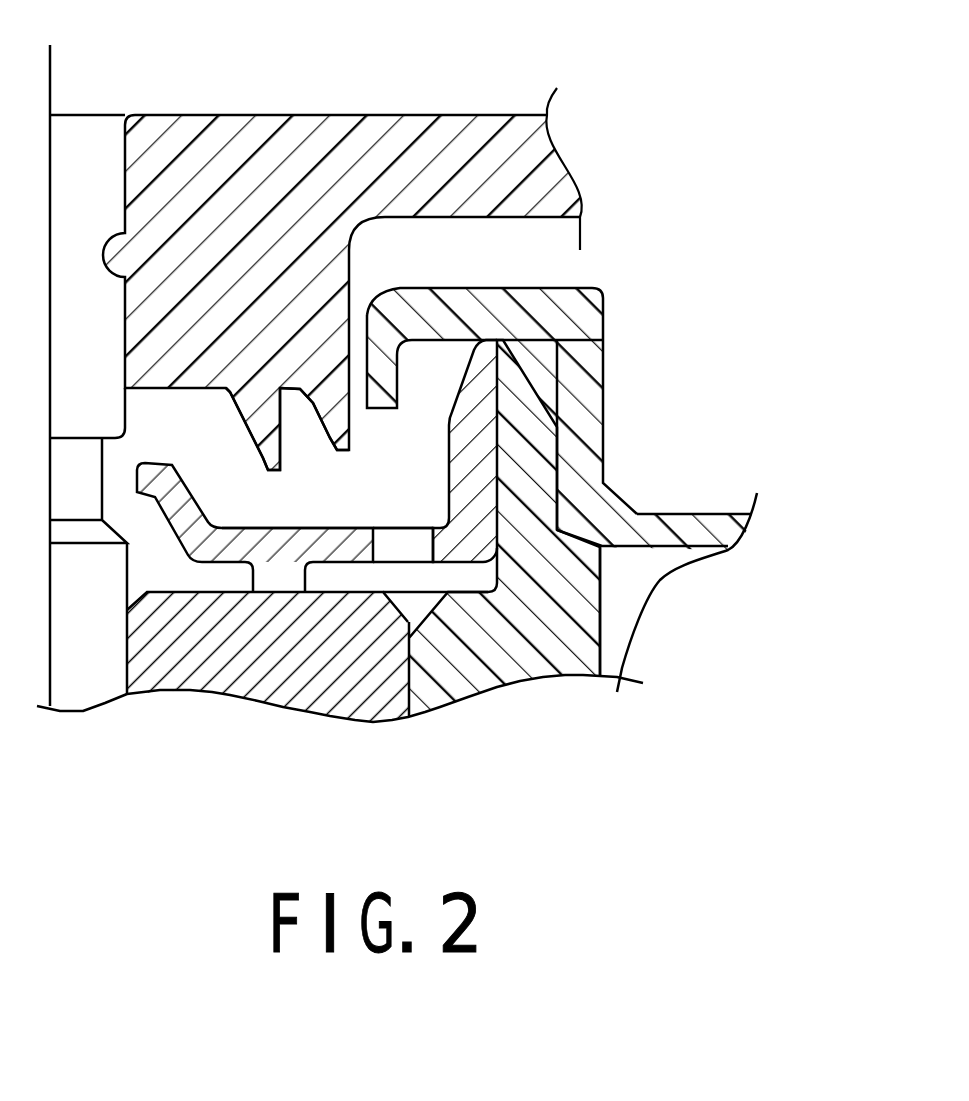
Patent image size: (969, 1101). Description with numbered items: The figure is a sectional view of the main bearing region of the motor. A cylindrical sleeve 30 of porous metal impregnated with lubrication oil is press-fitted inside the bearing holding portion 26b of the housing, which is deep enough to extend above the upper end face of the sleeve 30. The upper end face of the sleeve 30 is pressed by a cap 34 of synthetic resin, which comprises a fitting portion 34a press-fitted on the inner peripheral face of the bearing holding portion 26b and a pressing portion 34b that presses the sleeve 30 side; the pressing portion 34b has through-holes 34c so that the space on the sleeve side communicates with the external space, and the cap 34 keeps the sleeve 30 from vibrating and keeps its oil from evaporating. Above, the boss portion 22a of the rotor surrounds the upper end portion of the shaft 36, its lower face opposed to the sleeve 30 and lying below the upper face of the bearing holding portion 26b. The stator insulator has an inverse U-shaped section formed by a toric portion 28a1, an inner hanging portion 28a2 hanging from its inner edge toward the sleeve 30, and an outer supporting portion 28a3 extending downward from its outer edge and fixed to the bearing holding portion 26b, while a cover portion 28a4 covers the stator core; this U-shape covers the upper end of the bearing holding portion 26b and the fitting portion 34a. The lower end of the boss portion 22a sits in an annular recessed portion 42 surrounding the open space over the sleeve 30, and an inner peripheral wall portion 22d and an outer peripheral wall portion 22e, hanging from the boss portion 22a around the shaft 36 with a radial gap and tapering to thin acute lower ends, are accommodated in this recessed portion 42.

The boss portion 22a is at (230, 290).
The inner peripheral wall portion 22d is at (258, 437).
The outer peripheral wall portion 22e is at (332, 443).
The bearing holding portion 26b is at (400, 473).
The toric portion 28a1 is at (458, 312).
The inner hanging portion 28a2 is at (377, 358).
The outer supporting portion 28a3 is at (578, 362).
The cover portion 28a4 is at (687, 513).
The sleeve 30 is at (373, 673).
The cap 34 is at (802, 585).
The fitting portion 34a is at (607, 551).
The pressing portion 34b is at (332, 550).
The through-holes 34c is at (437, 540).
The shaft 36 is at (82, 182).
The annular recessed portion 42 is at (540, 455).